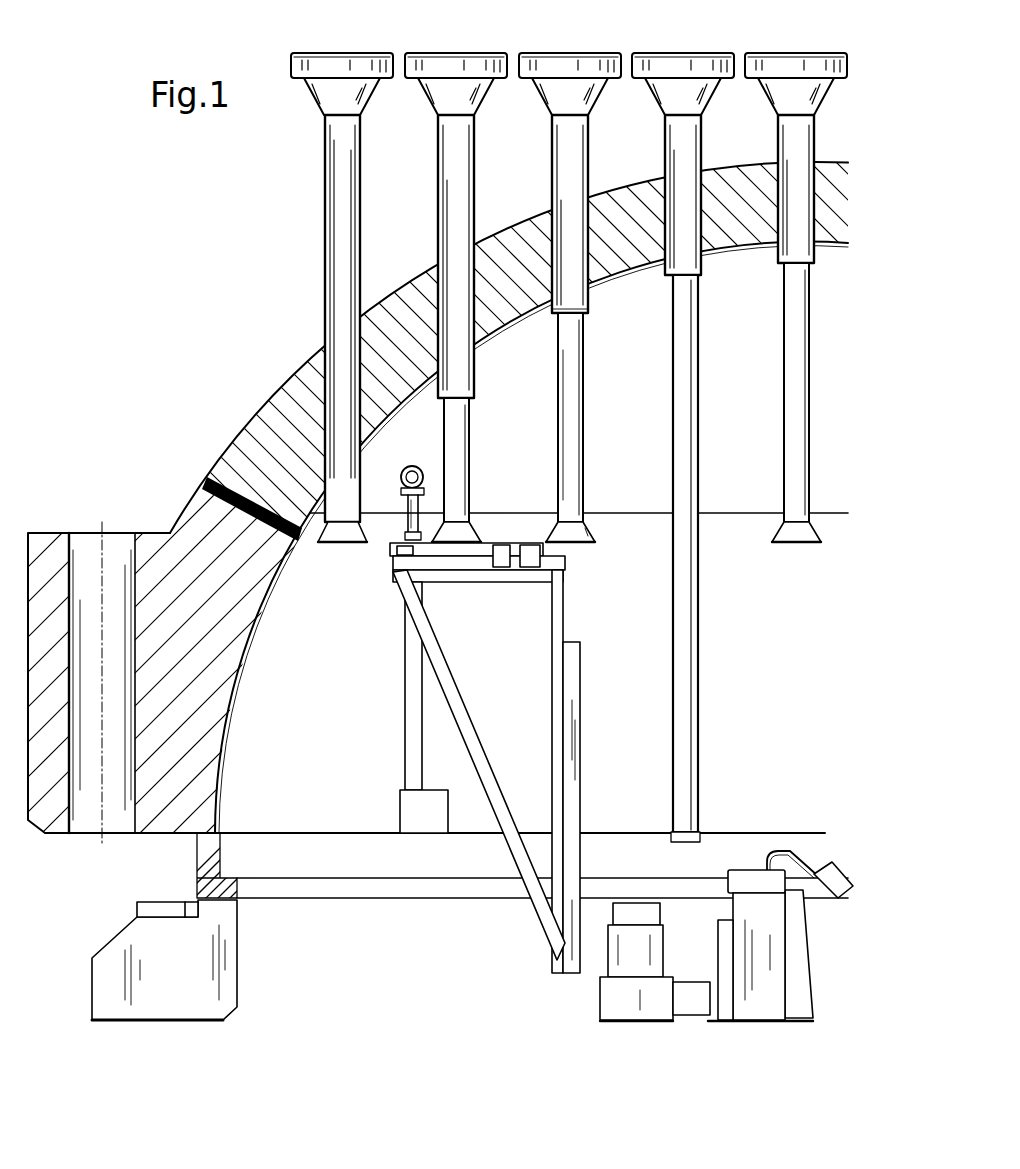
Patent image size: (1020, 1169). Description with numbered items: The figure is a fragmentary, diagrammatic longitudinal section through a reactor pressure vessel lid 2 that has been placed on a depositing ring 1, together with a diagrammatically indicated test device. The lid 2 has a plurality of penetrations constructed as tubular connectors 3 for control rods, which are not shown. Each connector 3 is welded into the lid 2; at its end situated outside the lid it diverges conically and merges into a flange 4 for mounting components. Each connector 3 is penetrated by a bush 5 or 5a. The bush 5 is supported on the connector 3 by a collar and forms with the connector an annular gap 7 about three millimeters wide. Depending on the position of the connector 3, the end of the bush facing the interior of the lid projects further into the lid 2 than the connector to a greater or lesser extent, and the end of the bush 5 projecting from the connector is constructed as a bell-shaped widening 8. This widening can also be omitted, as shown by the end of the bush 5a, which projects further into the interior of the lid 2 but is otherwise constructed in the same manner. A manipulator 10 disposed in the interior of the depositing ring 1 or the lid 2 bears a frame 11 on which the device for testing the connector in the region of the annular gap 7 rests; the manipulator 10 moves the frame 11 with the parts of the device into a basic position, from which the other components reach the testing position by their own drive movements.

The depositing ring 1 is at (104, 928).
The reactor pressure vessel lid 2 is at (251, 428).
The tubular connector 3 is at (583, 137).
The flange 4 is at (586, 68).
The bush 5 is at (577, 420).
The bush 5a is at (694, 672).
The annular gap 7 is at (584, 312).
The bell-shaped widening 8 is at (580, 537).
The manipulator 10 is at (818, 972).
The frame 11 is at (570, 750).